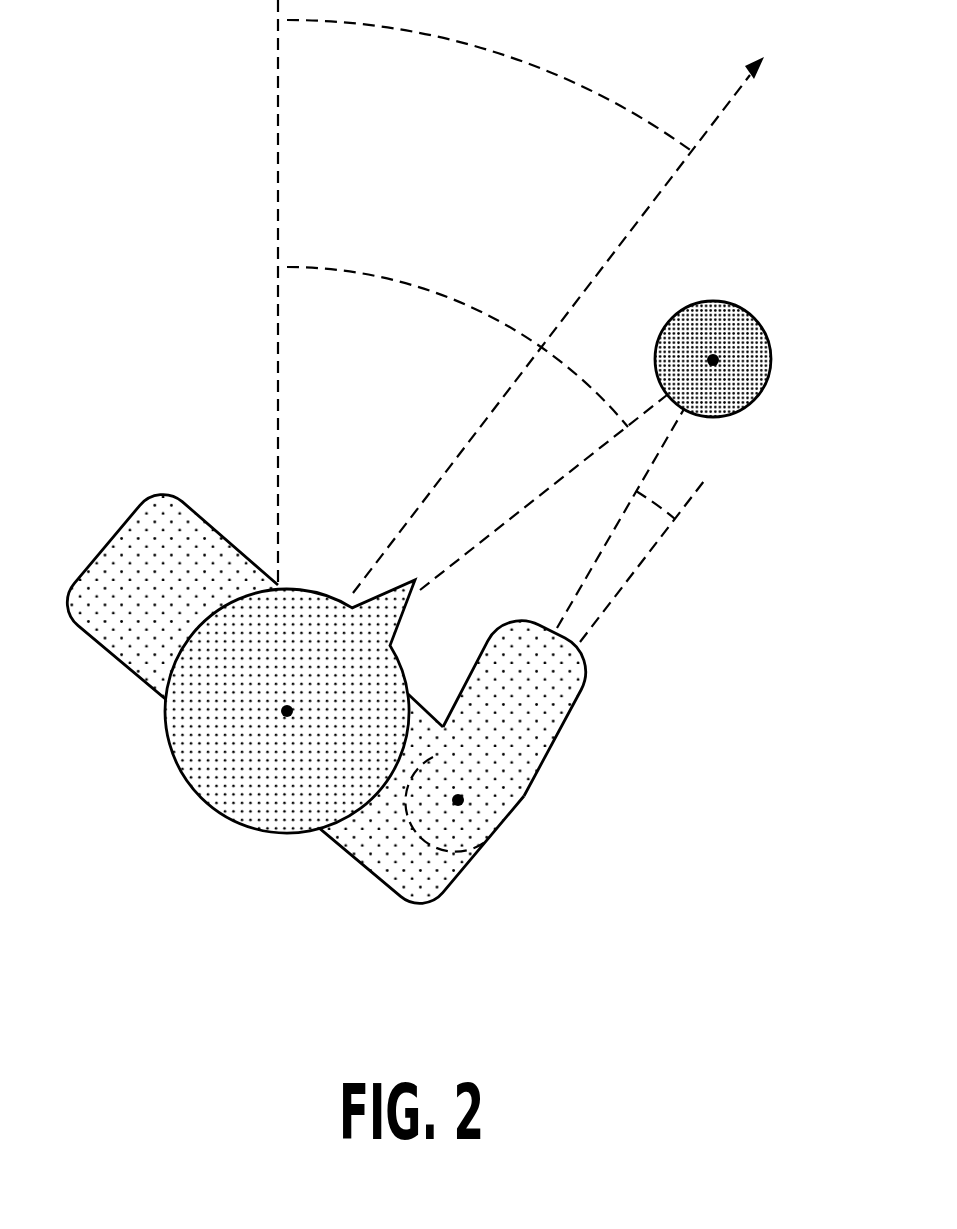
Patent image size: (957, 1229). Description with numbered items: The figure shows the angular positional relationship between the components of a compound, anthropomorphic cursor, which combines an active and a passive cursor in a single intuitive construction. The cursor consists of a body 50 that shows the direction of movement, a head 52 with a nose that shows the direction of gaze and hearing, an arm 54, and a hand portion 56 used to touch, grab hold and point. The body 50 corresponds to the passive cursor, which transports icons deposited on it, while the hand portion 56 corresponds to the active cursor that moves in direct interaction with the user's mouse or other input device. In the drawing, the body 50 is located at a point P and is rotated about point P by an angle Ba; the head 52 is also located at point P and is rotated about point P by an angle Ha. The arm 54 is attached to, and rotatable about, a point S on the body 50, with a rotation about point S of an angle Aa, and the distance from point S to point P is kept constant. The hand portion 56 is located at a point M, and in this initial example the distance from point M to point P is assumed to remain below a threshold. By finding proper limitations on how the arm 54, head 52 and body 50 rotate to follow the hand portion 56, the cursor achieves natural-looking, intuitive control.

The body 50 is at (92, 612).
The head 52 is at (261, 813).
The arm 54 is at (537, 728).
The hand portion 56 is at (742, 398).
The point P is at (263, 723).
The point S is at (478, 807).
The point M is at (736, 338).
The body rotation angle Ba is at (521, 296).
The head rotation angle Ha is at (477, 428).
The arm rotation angle Aa is at (650, 538).